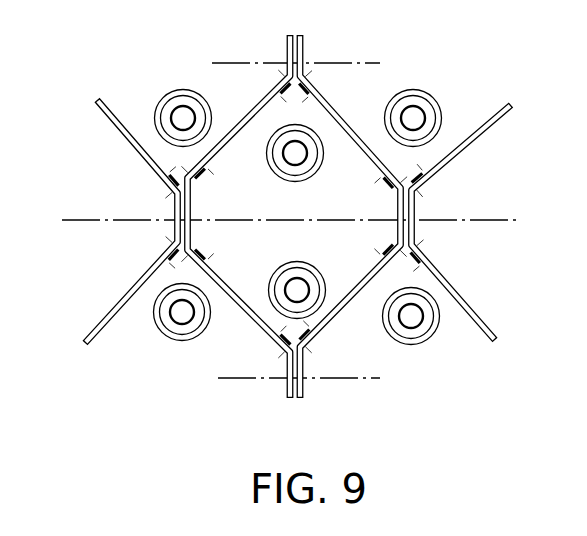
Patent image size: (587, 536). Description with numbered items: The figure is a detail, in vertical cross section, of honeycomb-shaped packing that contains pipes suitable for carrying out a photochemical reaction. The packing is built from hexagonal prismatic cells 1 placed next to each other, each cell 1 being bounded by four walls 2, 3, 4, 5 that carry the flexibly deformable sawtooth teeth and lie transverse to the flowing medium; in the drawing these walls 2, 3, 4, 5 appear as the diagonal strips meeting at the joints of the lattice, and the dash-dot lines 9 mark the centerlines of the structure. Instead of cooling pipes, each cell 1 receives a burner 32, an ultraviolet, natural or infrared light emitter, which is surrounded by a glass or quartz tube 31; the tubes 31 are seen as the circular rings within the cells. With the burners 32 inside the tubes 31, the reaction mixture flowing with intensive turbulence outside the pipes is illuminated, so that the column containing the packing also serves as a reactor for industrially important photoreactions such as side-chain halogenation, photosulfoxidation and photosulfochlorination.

The cell 1 is at (108, 195).
The cell wall 2 is at (367, 163).
The cell wall 3 is at (360, 280).
The cell wall 4 is at (221, 272).
The cell wall 5 is at (244, 118).
The center line 9 is at (354, 63).
The glass or quartz tube 31 is at (168, 97).
The burner 32 is at (175, 111).